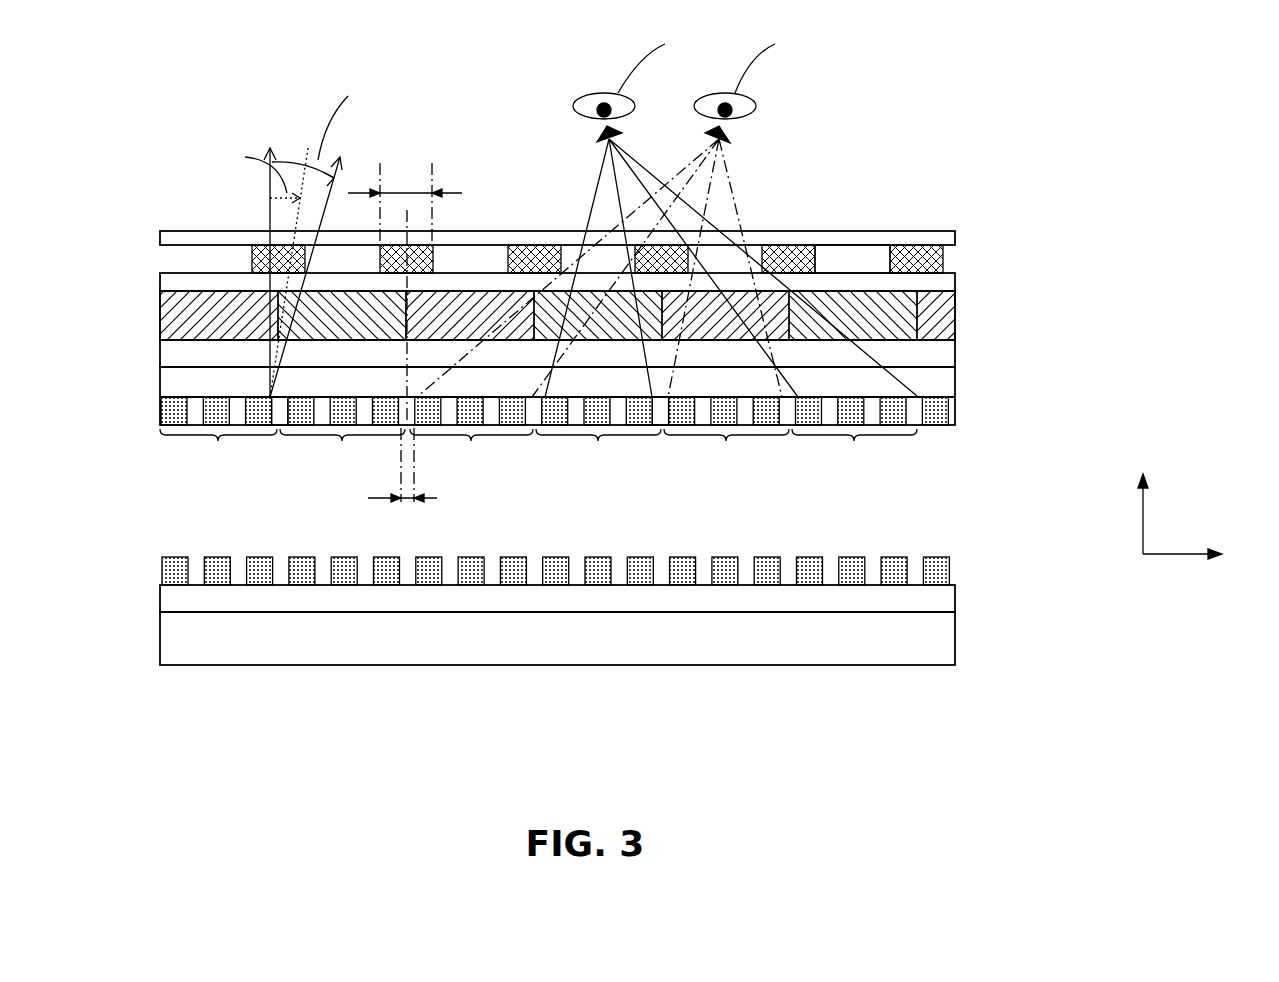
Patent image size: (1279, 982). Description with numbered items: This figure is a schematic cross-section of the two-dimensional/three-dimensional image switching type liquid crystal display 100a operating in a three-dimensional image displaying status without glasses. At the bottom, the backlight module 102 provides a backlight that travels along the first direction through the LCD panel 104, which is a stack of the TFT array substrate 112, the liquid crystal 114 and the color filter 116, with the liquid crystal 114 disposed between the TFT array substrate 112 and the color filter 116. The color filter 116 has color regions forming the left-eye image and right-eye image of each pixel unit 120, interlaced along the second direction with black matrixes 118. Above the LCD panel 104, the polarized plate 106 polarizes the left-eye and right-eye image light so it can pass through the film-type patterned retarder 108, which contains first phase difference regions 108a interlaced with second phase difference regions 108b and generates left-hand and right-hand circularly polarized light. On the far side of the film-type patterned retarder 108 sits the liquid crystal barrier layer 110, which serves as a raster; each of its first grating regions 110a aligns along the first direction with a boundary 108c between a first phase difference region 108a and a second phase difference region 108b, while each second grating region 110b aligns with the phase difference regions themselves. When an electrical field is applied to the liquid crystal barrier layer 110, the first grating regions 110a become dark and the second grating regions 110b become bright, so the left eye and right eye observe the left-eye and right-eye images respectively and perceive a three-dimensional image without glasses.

The 2D/3D image switching type liquid crystal display 100a is at (1057, 91).
The backlight module 102 is at (945, 636).
The liquid crystal display panel 104 is at (653, 405).
The polarized plate 106 is at (945, 346).
The film-type patterned retarder 108 is at (601, 234).
The first phase difference region 108a is at (618, 305).
The second phase difference region 108b is at (723, 327).
The boundary 108c is at (413, 317).
The liquid crystal barrier layer 110 is at (591, 221).
The first grating region 110a is at (263, 250).
The second grating region 110b is at (842, 253).
The thin-film transistor array substrate 112 is at (550, 551).
The liquid crystal 114 is at (962, 426).
The color filter 116 is at (591, 434).
The black matrix 118 is at (280, 428).
The pixel unit 120 is at (273, 553).